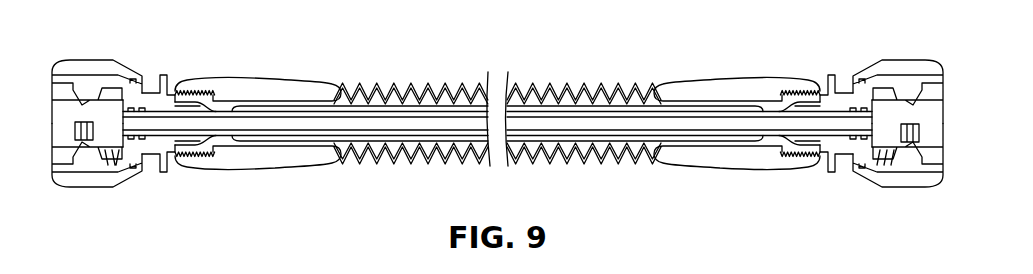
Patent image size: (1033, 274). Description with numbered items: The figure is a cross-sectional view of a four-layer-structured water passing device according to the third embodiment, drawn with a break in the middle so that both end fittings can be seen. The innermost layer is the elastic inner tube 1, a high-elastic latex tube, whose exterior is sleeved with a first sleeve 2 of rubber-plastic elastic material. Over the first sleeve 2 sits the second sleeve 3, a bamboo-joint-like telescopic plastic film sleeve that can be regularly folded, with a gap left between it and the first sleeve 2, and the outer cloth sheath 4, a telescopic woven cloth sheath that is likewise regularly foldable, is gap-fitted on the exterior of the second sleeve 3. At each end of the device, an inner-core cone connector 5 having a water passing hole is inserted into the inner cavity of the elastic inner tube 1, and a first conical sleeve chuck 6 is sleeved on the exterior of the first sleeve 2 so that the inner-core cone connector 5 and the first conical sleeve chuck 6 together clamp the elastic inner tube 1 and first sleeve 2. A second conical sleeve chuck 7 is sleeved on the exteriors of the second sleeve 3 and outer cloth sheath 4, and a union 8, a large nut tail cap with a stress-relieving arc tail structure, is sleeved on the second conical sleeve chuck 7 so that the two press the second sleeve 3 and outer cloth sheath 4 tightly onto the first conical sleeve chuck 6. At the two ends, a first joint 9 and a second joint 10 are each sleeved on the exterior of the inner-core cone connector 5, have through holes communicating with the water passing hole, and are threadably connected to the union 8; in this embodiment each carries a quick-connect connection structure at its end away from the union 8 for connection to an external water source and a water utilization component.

The elastic inner tube 1 is at (363, 113).
The first sleeve 2 is at (427, 110).
The second sleeve 3 is at (563, 103).
The outer cloth sheath 4 is at (603, 95).
The inner-core cone connector 5 is at (161, 110).
The first conical sleeve chuck 6 is at (223, 142).
The second conical sleeve chuck 7 is at (285, 145).
The union 8 is at (225, 87).
The first joint 9 is at (897, 72).
The second joint 10 is at (100, 68).